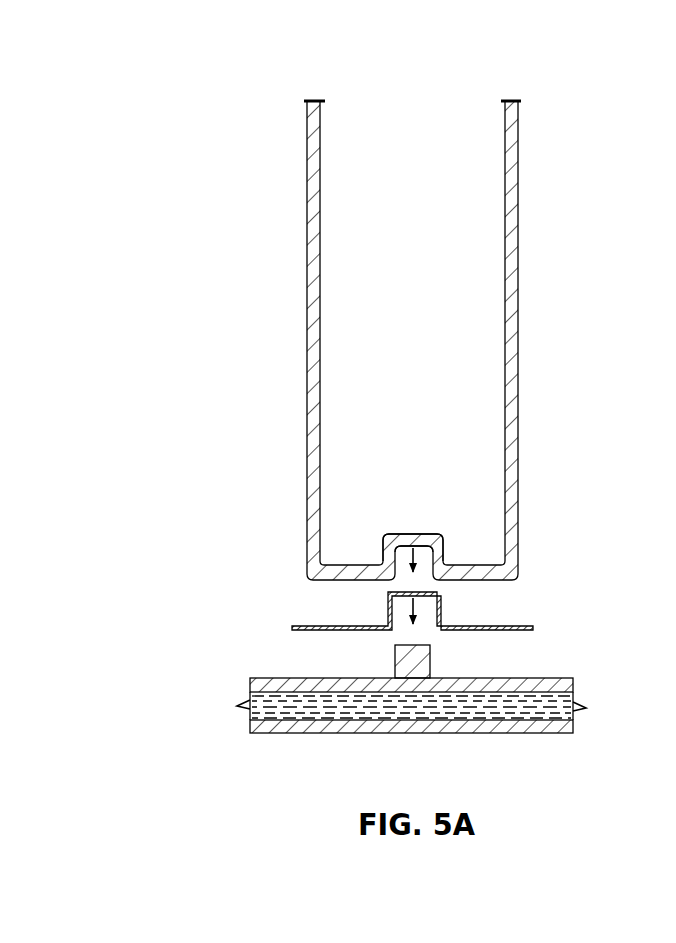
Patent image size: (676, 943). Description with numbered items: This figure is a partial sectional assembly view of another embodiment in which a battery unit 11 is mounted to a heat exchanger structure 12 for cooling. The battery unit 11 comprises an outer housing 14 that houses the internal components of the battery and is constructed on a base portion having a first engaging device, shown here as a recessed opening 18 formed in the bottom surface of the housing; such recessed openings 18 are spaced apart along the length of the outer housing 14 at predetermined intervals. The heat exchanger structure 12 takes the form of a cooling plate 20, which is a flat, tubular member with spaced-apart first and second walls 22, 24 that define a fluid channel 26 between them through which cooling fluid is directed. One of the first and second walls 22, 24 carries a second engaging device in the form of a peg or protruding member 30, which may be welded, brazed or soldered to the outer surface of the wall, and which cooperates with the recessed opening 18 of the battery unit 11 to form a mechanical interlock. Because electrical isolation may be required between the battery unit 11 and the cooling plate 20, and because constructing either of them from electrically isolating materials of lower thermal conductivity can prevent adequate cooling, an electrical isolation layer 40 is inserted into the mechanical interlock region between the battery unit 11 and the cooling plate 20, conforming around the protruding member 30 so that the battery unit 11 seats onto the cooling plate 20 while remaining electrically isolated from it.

The battery unit 11 is at (240, 88).
The outer housing 14 is at (518, 203).
The recessed openings 18 is at (447, 548).
The electrical isolation layer 40 is at (512, 627).
The heat exchanger structure 12 is at (258, 654).
The protruding members 30 is at (430, 660).
The first wall 22 is at (555, 678).
The fluid channel 26 is at (295, 713).
The second wall 24 is at (525, 733).
The cooling plate 20 is at (248, 727).